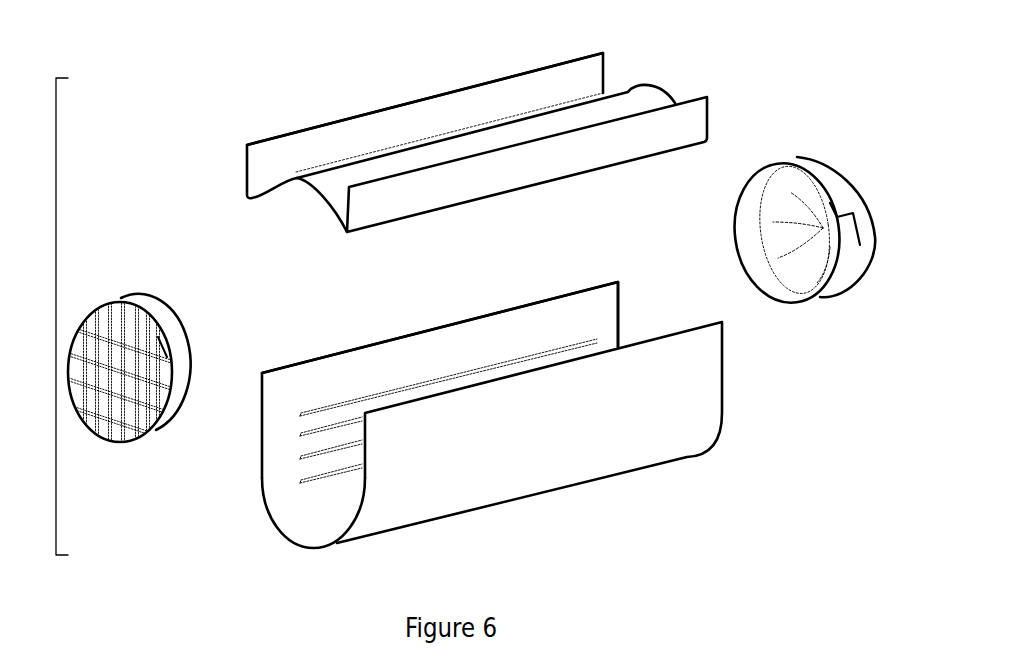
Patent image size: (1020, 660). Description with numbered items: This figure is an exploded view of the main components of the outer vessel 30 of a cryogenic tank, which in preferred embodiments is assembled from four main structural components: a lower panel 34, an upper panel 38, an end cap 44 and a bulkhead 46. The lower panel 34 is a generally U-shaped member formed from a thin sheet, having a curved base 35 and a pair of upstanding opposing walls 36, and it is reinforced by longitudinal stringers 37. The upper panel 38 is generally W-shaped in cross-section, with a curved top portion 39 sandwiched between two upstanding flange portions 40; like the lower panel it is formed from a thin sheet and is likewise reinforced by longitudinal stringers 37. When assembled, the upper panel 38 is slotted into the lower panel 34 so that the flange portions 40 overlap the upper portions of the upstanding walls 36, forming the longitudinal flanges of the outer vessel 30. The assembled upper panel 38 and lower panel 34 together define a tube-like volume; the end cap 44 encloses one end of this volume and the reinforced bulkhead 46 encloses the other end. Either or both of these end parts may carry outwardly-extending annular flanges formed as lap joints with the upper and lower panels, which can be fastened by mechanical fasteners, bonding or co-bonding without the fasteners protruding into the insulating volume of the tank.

The outer vessel 30 is at (56, 317).
The lower panel 34 is at (708, 457).
The curved base 35 is at (307, 517).
The upstanding opposing walls 36 is at (602, 304).
The longitudinal stringers 37 is at (298, 405).
The upper panel 38 is at (692, 70).
The curved top portion 39 is at (307, 187).
The flange portions 40 is at (375, 190).
The end cap 44 is at (840, 277).
The bulkhead 46 is at (160, 320).